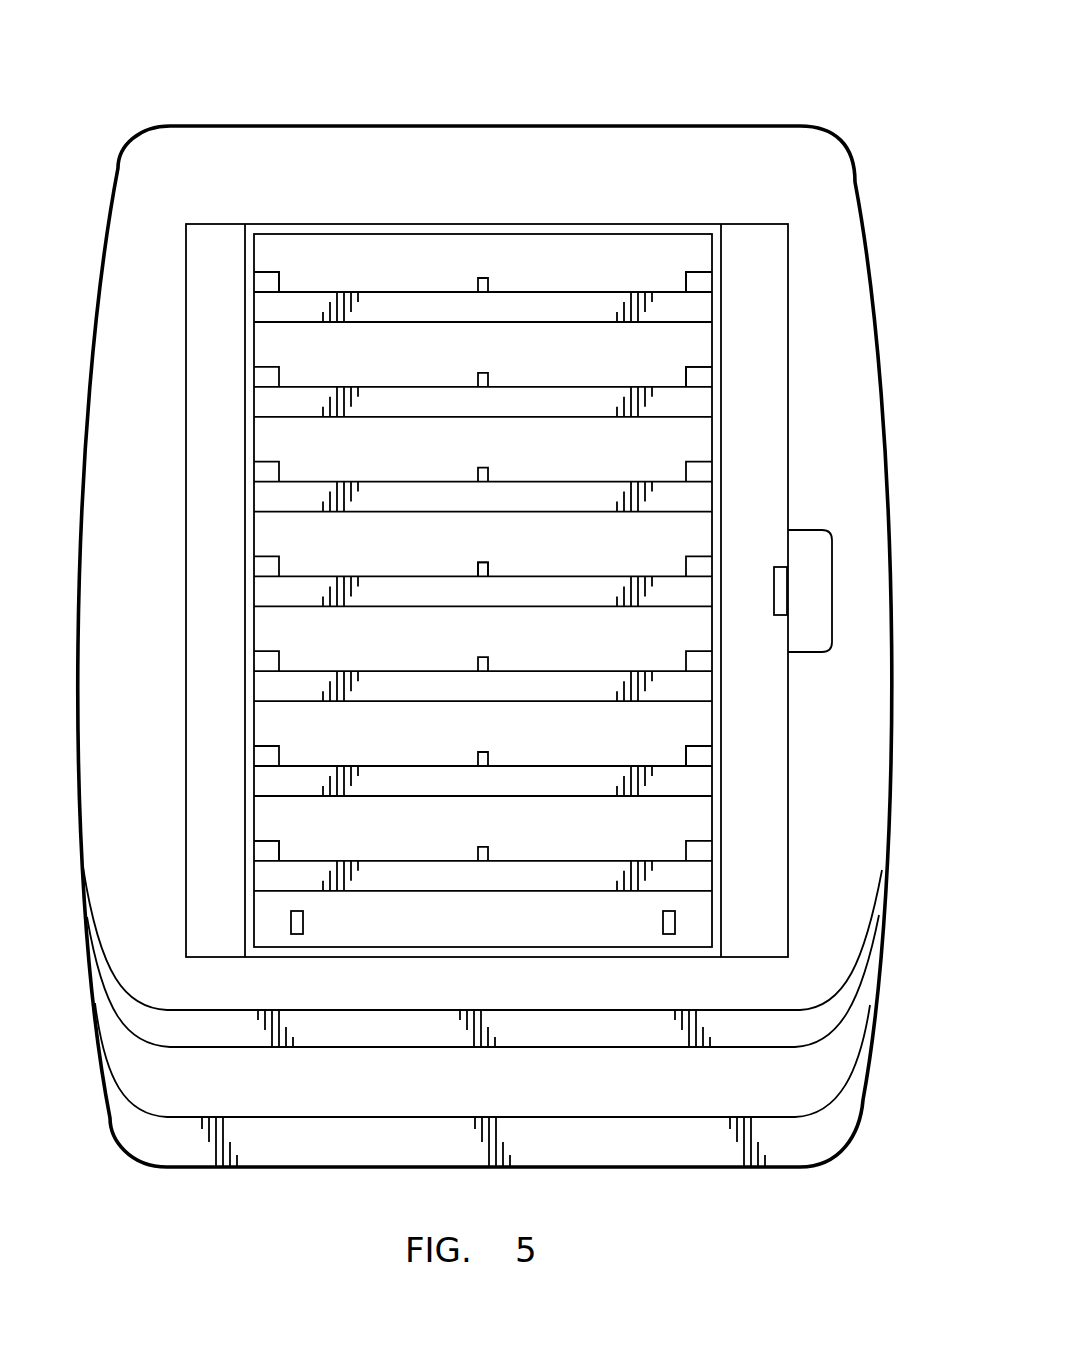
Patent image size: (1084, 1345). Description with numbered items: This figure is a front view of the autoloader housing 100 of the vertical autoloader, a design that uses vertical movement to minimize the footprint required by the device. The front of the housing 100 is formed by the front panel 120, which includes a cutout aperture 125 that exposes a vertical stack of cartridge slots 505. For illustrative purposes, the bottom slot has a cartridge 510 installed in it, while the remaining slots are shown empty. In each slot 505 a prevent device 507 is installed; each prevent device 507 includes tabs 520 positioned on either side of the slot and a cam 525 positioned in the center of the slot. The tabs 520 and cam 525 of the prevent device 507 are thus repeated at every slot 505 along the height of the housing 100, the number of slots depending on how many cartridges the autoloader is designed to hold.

The housing 100 is at (779, 76).
The front panel 120 is at (875, 785).
The cutout aperture 125 is at (605, 738).
The cartridge slot 505 is at (280, 440).
The prevent device 507 is at (697, 378).
The cartridge 510 is at (590, 925).
The tab 520 is at (292, 253).
The cam 525 is at (487, 562).